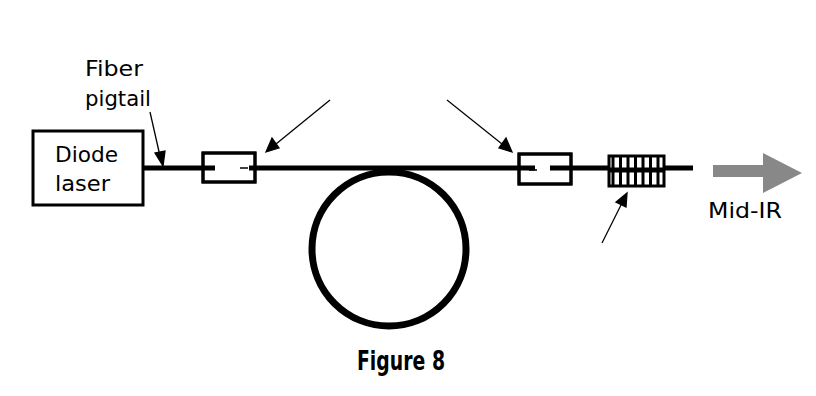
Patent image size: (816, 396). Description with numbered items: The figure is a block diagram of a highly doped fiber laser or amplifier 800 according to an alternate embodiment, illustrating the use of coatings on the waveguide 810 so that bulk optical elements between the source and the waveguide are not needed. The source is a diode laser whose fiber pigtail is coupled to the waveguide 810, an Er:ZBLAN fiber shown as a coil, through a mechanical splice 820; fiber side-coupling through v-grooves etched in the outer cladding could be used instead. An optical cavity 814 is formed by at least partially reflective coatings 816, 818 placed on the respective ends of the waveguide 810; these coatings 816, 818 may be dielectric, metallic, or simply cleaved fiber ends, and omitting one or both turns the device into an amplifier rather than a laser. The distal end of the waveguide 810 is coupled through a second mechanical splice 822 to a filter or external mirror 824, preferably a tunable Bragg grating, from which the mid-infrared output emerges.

The mid-IR fiber laser system 800 is at (240, 62).
The waveguide 810 is at (318, 282).
The optical cavity 814 is at (523, 142).
The partially reflective coating 816 is at (252, 184).
The partially reflective coating 818 is at (522, 168).
The mechanical splice 820 is at (213, 152).
The mechanical splice 822 is at (563, 153).
The filter or external mirror 824 is at (655, 187).